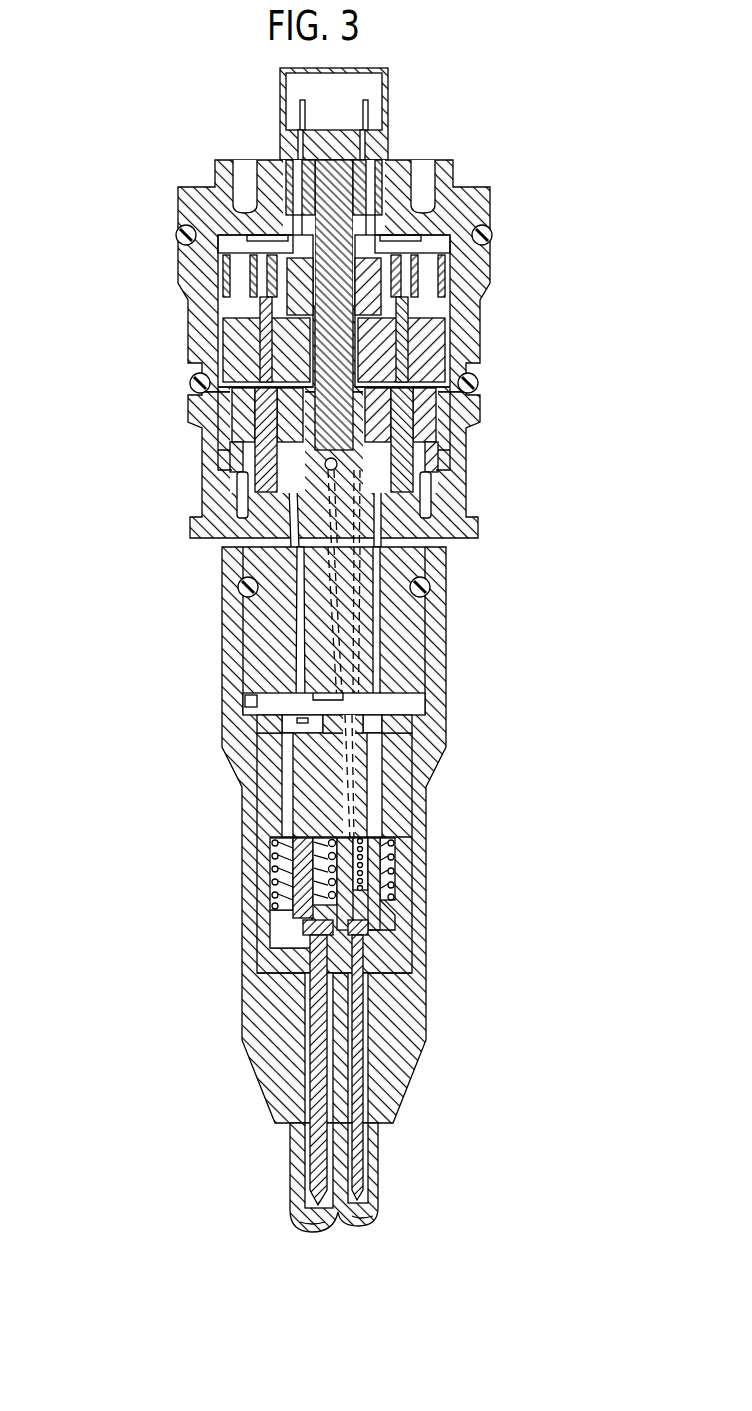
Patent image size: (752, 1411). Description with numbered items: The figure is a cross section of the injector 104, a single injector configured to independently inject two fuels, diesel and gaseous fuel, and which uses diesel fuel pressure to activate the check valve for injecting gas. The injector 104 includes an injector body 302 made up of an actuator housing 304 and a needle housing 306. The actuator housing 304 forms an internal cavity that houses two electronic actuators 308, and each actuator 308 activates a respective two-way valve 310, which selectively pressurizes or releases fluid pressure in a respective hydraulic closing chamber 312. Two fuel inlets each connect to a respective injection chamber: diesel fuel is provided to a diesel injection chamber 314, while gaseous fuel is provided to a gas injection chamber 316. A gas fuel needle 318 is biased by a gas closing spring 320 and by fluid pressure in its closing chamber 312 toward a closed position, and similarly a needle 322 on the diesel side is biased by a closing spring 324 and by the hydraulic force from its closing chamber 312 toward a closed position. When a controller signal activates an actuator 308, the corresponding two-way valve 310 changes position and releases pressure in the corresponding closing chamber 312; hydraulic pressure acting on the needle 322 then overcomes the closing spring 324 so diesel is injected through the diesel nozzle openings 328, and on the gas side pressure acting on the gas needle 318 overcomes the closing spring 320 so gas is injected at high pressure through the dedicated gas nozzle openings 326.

The injector 104 is at (522, 196).
The injector body 302 is at (478, 530).
The actuator housing 304 is at (200, 288).
The needle housing 306 is at (223, 728).
The electronic actuator 308 is at (233, 336).
The 2-way valve 310 is at (233, 445).
The hydraulic closing chamber 312 is at (285, 700).
The diesel injection chamber 314 is at (263, 948).
The gas injection chamber 316 is at (391, 924).
The gas fuel needle 318 is at (323, 1085).
The gas closing spring 320 is at (267, 860).
The needle 322 is at (360, 1092).
The closing spring 324 is at (391, 846).
The gas nozzle openings 326 is at (300, 1222).
The diesel nozzle openings 328 is at (373, 1222).